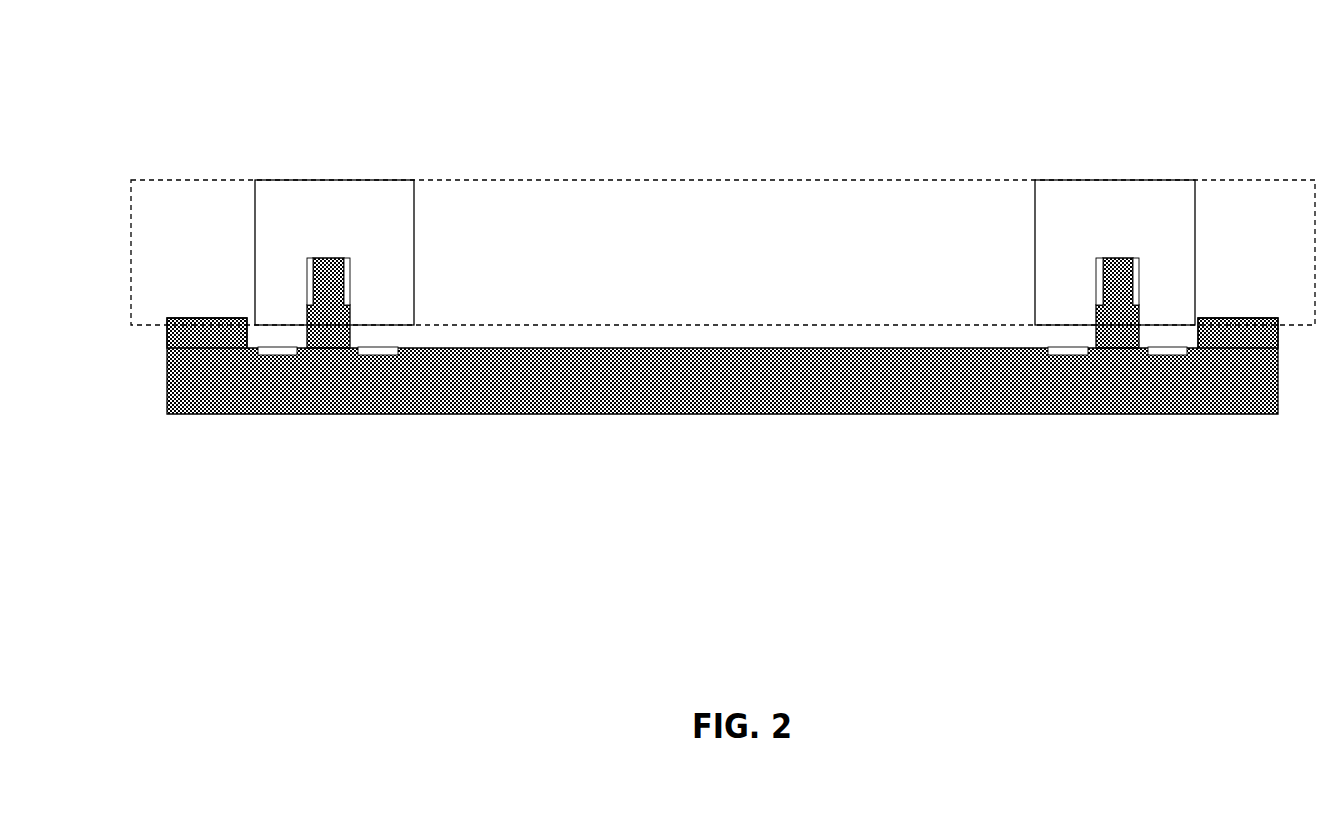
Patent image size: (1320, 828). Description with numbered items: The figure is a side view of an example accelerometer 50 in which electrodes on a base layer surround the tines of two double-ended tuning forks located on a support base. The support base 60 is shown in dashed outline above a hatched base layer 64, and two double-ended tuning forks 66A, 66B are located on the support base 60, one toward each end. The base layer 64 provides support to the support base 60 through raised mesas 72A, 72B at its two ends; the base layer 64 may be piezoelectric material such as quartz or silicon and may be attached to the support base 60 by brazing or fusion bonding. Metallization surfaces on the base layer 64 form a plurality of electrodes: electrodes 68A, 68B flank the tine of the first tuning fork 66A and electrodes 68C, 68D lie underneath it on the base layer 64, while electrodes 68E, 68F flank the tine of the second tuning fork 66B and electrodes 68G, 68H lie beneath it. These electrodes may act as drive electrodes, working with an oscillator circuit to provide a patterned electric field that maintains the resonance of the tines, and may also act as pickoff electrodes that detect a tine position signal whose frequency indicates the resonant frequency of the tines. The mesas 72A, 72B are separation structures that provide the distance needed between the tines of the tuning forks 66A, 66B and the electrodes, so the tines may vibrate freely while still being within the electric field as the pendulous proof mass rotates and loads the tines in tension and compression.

The accelerometer 50 is at (270, 86).
The support base 60 is at (467, 180).
The base layer 64 is at (812, 414).
The double-ended tuning fork 66A is at (357, 241).
The double-ended tuning fork 66B is at (1137, 241).
The electrode 68A is at (307, 285).
The electrode 68B is at (350, 285).
The electrode 68C is at (272, 356).
The electrode 68D is at (385, 356).
The electrode 68E is at (1096, 285).
The electrode 68F is at (1139, 285).
The electrode 68G is at (1058, 356).
The electrode 68H is at (1170, 356).
The mesa 72A is at (222, 318).
The mesa 72B is at (1235, 318).